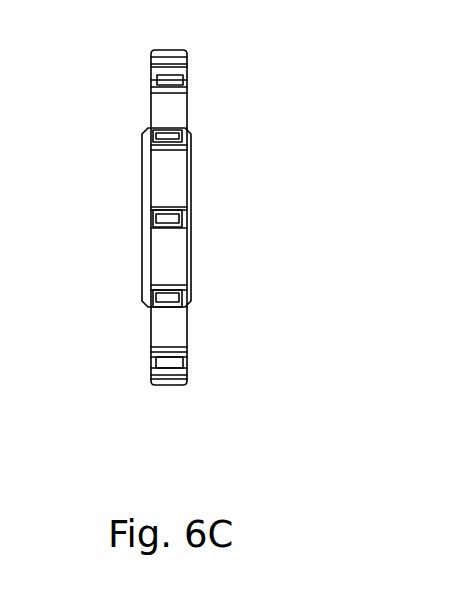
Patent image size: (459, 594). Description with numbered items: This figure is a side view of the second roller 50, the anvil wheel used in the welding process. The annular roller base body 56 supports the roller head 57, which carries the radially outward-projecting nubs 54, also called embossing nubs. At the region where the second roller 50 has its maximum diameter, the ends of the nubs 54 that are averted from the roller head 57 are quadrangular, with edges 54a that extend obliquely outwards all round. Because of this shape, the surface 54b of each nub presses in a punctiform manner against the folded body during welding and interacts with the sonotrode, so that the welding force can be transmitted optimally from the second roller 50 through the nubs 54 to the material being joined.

The second roller 50 is at (186, 206).
The nubs 54 is at (223, 234).
The edges 54a is at (178, 221).
The surface 54b is at (228, 241).
The roller base body 56 is at (192, 287).
The roller head 57 is at (158, 327).